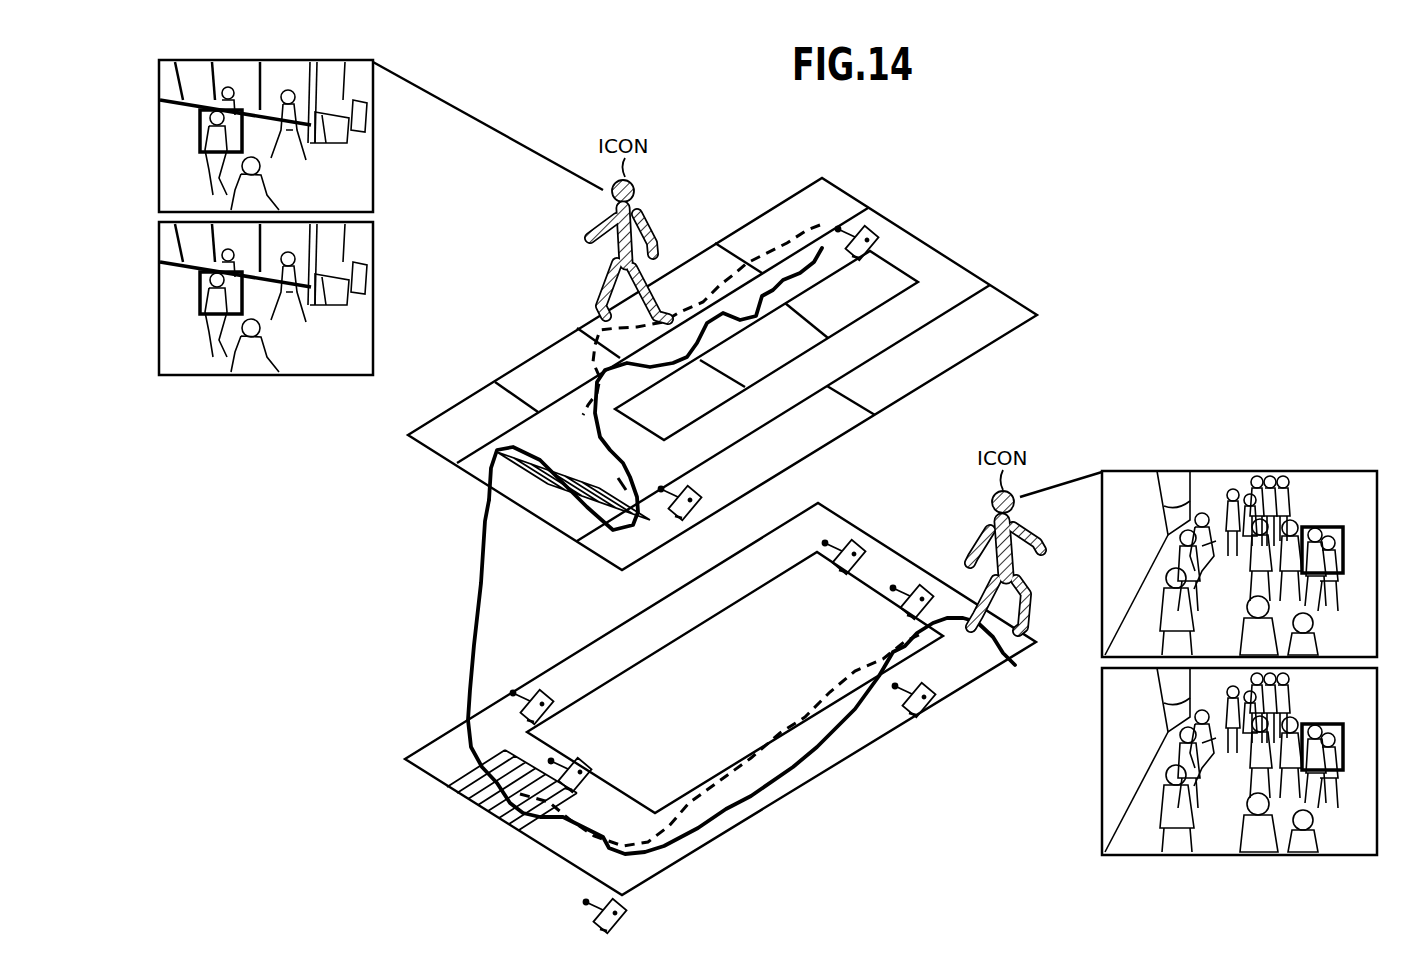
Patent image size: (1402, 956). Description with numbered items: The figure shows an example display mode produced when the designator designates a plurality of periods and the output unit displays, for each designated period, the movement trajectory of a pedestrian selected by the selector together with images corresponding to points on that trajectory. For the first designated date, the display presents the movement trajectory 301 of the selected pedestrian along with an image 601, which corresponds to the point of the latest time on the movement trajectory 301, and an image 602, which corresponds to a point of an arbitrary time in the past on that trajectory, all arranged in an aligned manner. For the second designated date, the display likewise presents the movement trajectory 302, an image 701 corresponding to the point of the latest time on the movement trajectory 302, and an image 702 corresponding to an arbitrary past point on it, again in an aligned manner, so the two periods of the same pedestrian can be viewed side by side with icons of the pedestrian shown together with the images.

The movement trajectory 301 is at (595, 372).
The movement trajectory 302 is at (846, 740).
The image 601 is at (1242, 470).
The image 602 is at (262, 58).
The image 701 is at (1240, 857).
The image 702 is at (262, 376).